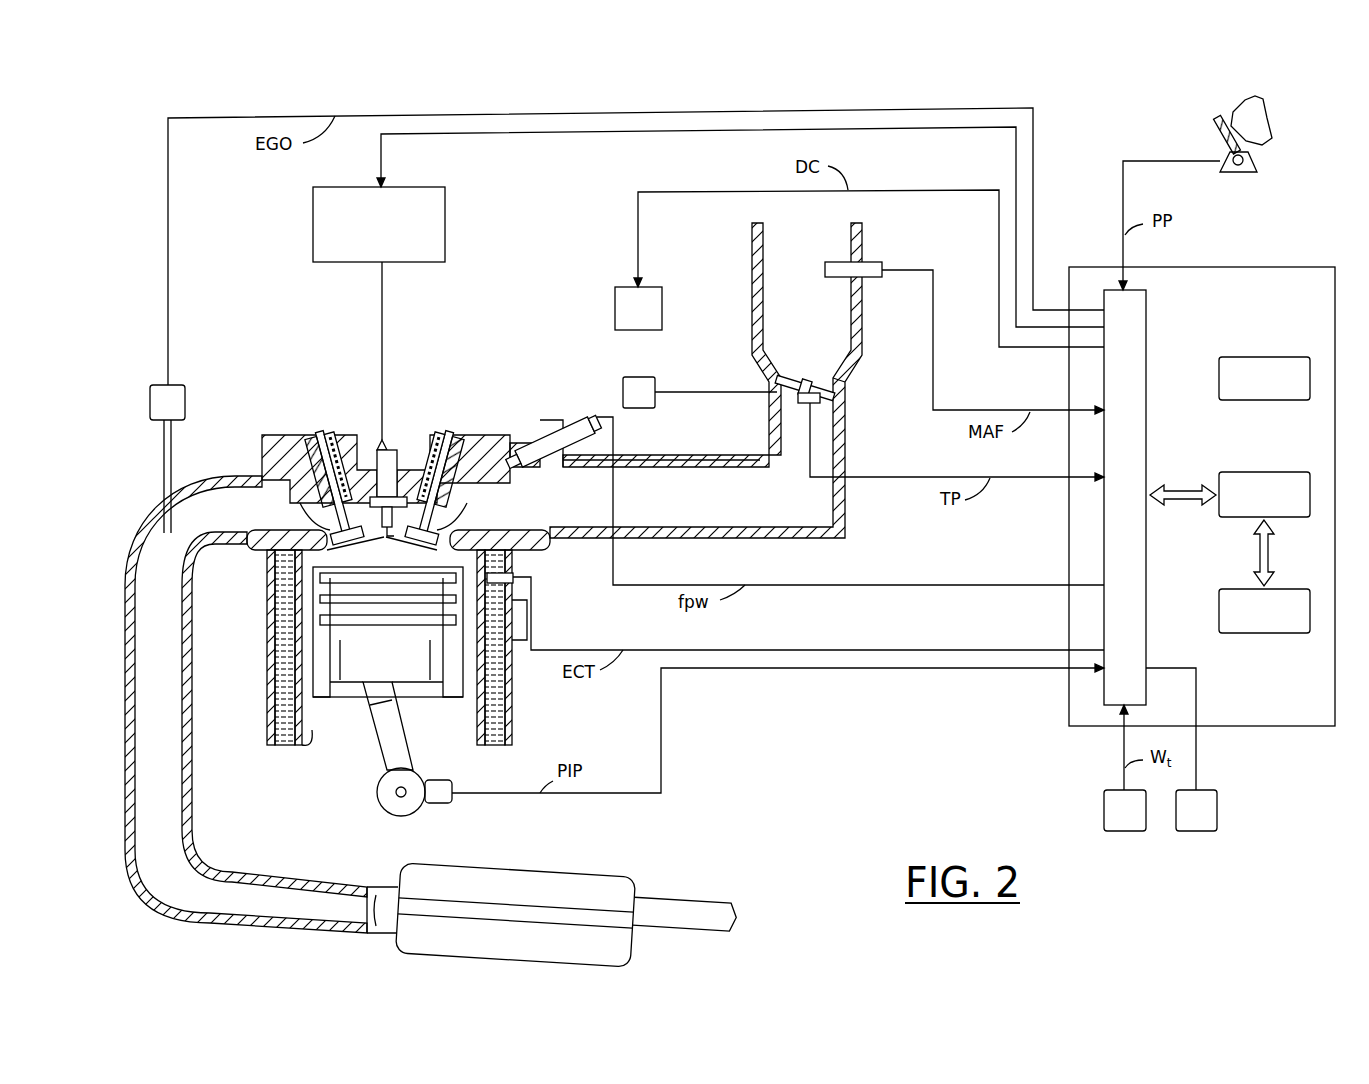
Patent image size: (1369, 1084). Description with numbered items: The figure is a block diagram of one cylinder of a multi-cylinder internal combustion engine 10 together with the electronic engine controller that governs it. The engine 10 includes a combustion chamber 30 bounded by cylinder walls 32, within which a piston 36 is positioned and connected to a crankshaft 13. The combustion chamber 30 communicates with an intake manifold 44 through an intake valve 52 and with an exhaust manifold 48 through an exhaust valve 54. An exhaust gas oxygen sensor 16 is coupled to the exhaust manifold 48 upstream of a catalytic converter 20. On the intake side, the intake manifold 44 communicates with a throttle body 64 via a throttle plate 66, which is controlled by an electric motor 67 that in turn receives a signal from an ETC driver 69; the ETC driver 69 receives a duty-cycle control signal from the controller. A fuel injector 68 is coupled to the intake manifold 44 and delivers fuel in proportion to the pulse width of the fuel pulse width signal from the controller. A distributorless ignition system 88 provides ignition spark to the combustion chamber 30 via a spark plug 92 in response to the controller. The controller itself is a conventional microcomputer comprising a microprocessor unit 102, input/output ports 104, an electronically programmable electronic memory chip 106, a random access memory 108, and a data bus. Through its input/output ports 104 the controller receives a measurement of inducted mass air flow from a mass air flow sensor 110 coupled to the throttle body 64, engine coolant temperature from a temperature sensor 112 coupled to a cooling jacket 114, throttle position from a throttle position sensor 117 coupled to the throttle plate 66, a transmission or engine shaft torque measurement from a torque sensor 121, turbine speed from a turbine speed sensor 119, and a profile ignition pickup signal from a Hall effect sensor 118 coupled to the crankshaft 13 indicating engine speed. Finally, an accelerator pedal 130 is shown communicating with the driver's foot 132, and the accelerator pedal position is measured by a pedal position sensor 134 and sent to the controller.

The internal combustion engine 10 is at (297, 830).
The crankshaft 13 is at (377, 790).
The exhaust gas oxygen sensor 16 is at (150, 389).
The catalytic converter 20 is at (540, 866).
The combustion chamber 30 is at (357, 555).
The cylinder walls 32 is at (305, 750).
The piston 36 is at (356, 694).
The intake manifold 44 is at (758, 510).
The exhaust manifold 48 is at (165, 529).
The intake valve 52 is at (447, 521).
The exhaust valve 54 is at (323, 518).
The throttle body 64 is at (770, 269).
The throttle plate 66 is at (792, 372).
The electric motor 67 is at (637, 376).
The fuel injector 68 is at (556, 425).
The ETC driver 69 is at (615, 307).
The distributorless ignition system 88 is at (447, 234).
The spark plug 92 is at (400, 458).
The microprocessor unit 102 is at (1258, 471).
The input/output ports 104 is at (1148, 306).
The electronic memory chip 106 is at (1277, 356).
The random access memory 108 is at (1275, 634).
The mass air flow sensor 110 is at (830, 262).
The temperature sensor 112 is at (514, 577).
The cooling jacket 114 is at (500, 722).
The throttle position sensor 117 is at (847, 380).
The Hall effect sensor 118 is at (452, 803).
The turbine speed sensor 119 is at (1103, 812).
The torque sensor 121 is at (1218, 813).
The accelerator pedal 130 is at (1215, 133).
The driver's foot 132 is at (1270, 131).
The pedal position sensor 134 is at (1257, 156).